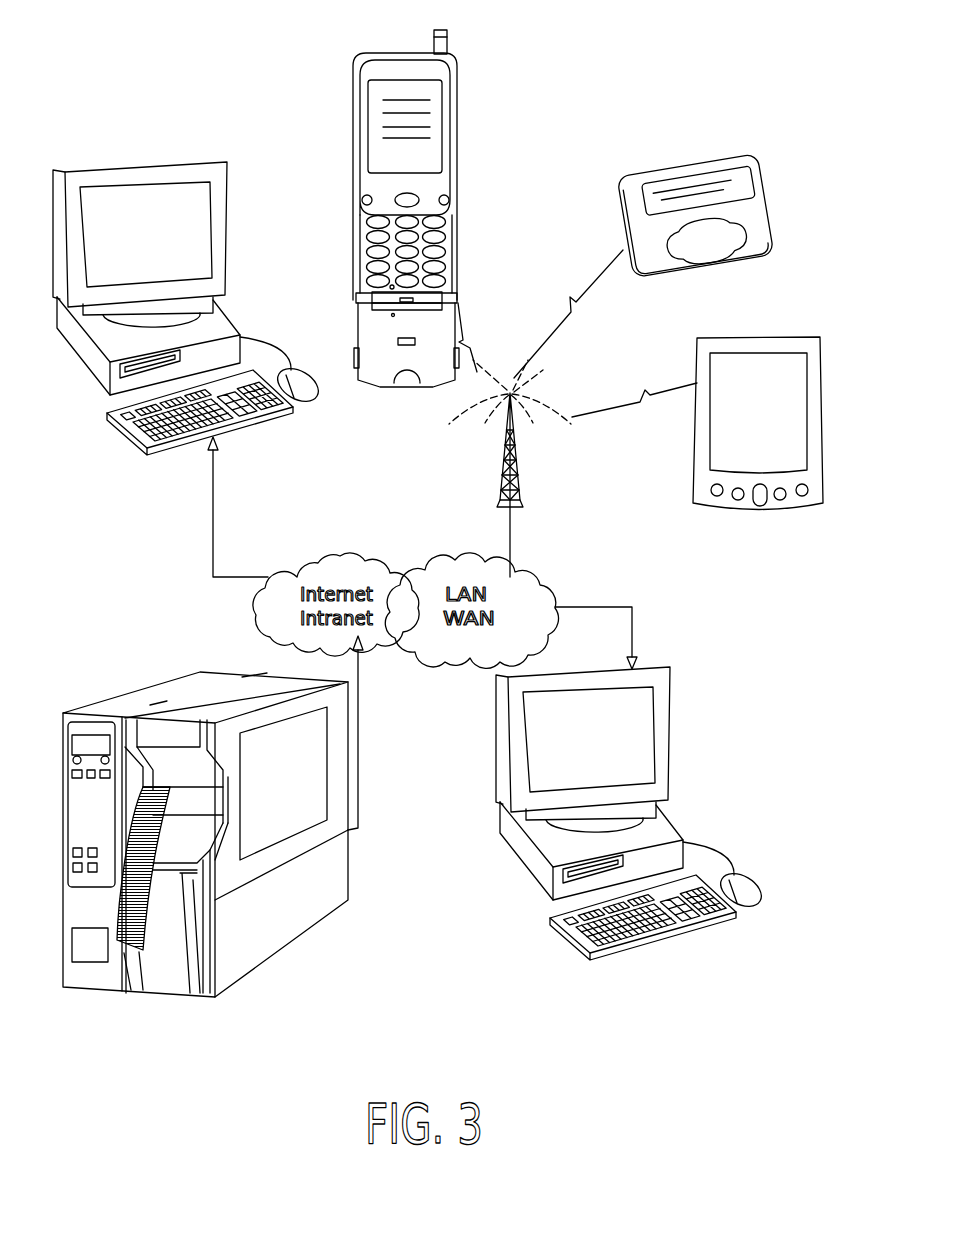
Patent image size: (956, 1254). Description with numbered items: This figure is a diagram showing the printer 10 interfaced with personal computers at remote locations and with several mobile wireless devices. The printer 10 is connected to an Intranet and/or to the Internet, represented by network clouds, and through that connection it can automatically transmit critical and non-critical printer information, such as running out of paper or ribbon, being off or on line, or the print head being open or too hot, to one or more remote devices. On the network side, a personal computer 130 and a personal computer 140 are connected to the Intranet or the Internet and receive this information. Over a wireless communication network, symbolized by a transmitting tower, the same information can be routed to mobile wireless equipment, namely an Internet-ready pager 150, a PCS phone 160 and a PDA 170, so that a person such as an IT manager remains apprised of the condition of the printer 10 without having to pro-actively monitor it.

The printer 10 is at (87, 683).
The personal computer 130 is at (718, 754).
The personal computer 140 is at (237, 195).
The Internet-ready pager 150 is at (676, 298).
The PCS phone 160 is at (465, 265).
The PDA 170 is at (788, 521).